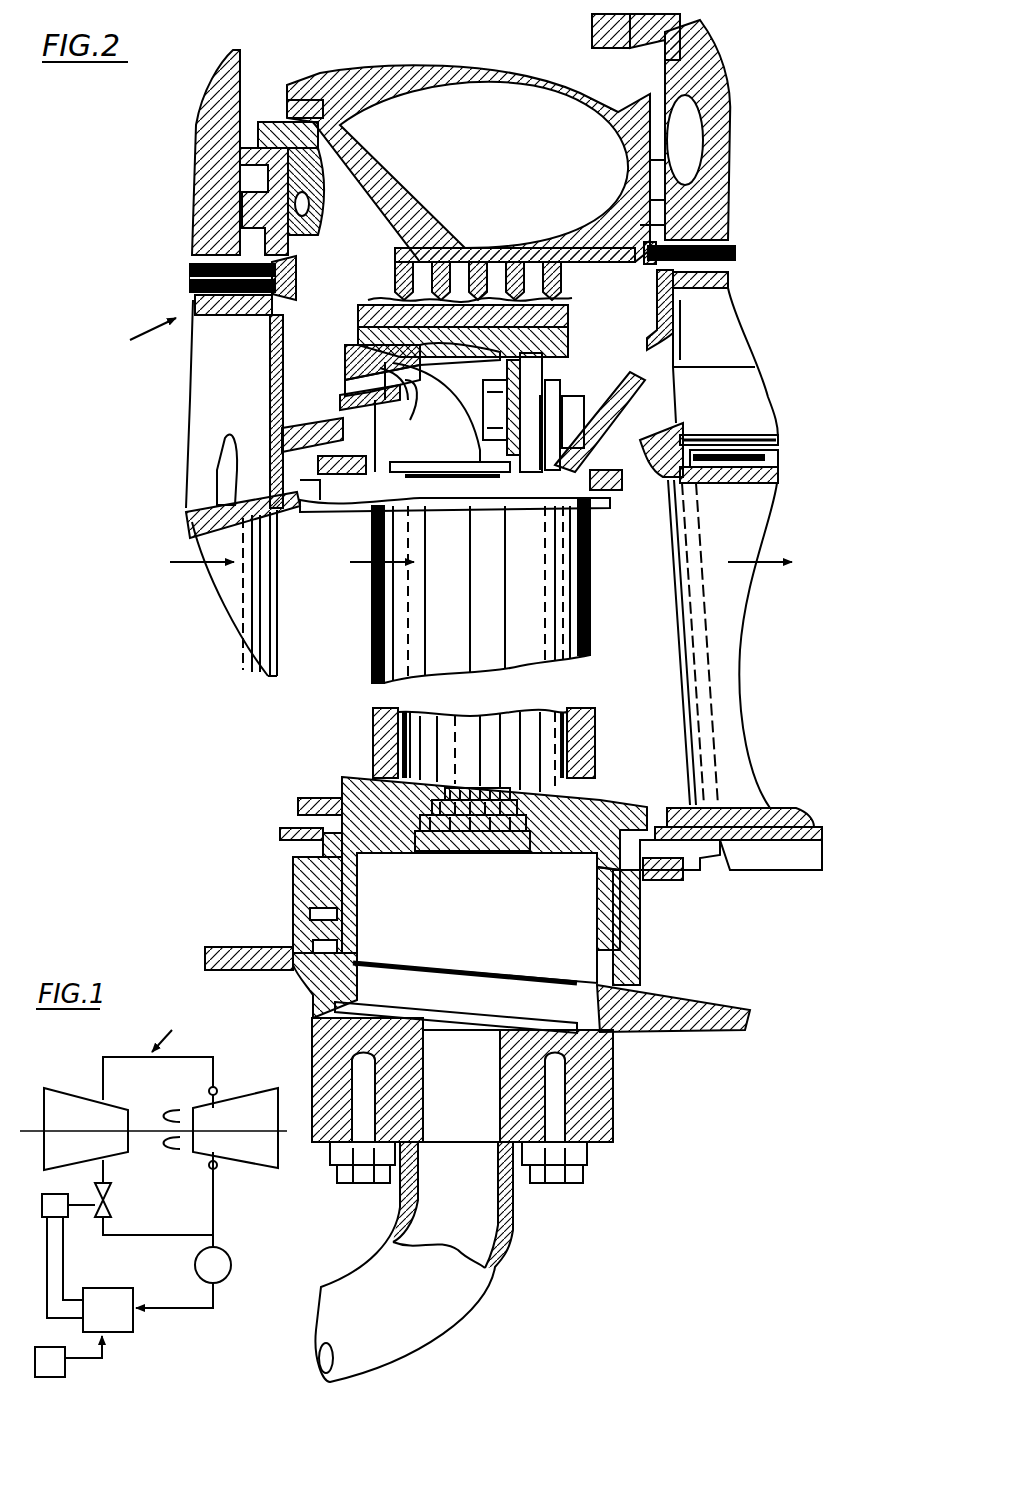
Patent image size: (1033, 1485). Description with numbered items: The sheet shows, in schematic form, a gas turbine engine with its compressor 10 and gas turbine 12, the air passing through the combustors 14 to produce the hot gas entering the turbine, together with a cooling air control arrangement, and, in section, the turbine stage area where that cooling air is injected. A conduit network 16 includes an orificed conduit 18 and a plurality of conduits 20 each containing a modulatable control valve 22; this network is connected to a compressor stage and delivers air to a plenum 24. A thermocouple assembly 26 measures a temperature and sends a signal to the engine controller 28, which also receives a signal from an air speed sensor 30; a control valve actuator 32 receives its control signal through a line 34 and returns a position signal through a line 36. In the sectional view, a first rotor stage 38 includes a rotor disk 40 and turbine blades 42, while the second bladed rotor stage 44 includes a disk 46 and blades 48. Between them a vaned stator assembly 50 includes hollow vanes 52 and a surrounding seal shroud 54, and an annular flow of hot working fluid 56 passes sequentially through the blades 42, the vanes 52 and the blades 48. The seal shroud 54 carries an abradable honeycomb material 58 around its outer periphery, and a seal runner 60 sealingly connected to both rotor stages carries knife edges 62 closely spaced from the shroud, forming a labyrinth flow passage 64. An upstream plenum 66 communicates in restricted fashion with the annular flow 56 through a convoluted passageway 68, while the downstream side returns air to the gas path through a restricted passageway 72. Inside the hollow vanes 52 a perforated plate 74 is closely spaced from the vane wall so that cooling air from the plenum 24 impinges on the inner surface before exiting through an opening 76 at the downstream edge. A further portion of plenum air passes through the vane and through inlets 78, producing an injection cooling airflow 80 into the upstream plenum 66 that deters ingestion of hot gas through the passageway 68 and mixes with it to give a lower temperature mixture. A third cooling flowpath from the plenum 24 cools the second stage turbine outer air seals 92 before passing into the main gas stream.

In FIG. 1, the compressor 10 is at (60, 1086).
In FIG. 1, the gas turbine 12 is at (270, 1150).
In FIG. 1, the combustors 14 is at (166, 1106).
In FIG. 1, the conduit network 16 is at (175, 1033).
In FIG. 1, the orificed conduit 18 is at (110, 1057).
In FIG. 2, the conduits 20 is at (612, 366).
In FIG. 1, the conduits 20 is at (148, 1236).
In FIG. 1, the modulatable control valve 22 is at (108, 1206).
In FIG. 2, the plenum 24 is at (464, 940).
In FIG. 1, the plenum 24 is at (218, 1087).
In FIG. 1, the thermocouple assembly 26 is at (214, 1240).
In FIG. 1, the engine controller 28 is at (134, 1334).
In FIG. 1, the air speed sensor 30 is at (84, 1368).
In FIG. 1, the control valve actuator 32 is at (60, 1196).
In FIG. 1, the line 34 is at (66, 1250).
In FIG. 1, the line 36 is at (50, 1278).
In FIG. 2, the first rotor stage 38 is at (134, 343).
In FIG. 2, the rotor disk 40 is at (192, 150).
In FIG. 2, the turbine blades 42 is at (236, 602).
In FIG. 2, the second bladed rotor stage 44 is at (752, 302).
In FIG. 2, the disk 46 is at (720, 176).
In FIG. 2, the blades 48 is at (740, 524).
In FIG. 2, the vaned stator assembly 50 is at (604, 760).
In FIG. 2, the hollow vanes 52 is at (580, 638).
In FIG. 2, the seal shroud 54 is at (572, 343).
In FIG. 2, the annular flow of hot working fluid 56 is at (460, 580).
In FIG. 2, the abradable honeycomb material 58 is at (570, 316).
In FIG. 2, the seal runner 60 is at (345, 212).
In FIG. 2, the knife edges 62 is at (384, 290).
In FIG. 2, the labyrinth flow passage 64 is at (386, 299).
In FIG. 2, the upstream plenum 66 is at (342, 345).
In FIG. 2, the convoluted passageway 68 is at (268, 448).
In FIG. 2, the restricted passageway 72 is at (655, 412).
In FIG. 2, the perforated plate 74 is at (392, 650).
In FIG. 2, the opening 76 is at (588, 592).
In FIG. 2, the inlets 78 is at (345, 382).
In FIG. 2, the injection cooling airflow 80 is at (345, 356).
In FIG. 2, the second stage turbine outer air seals 92 is at (674, 808).